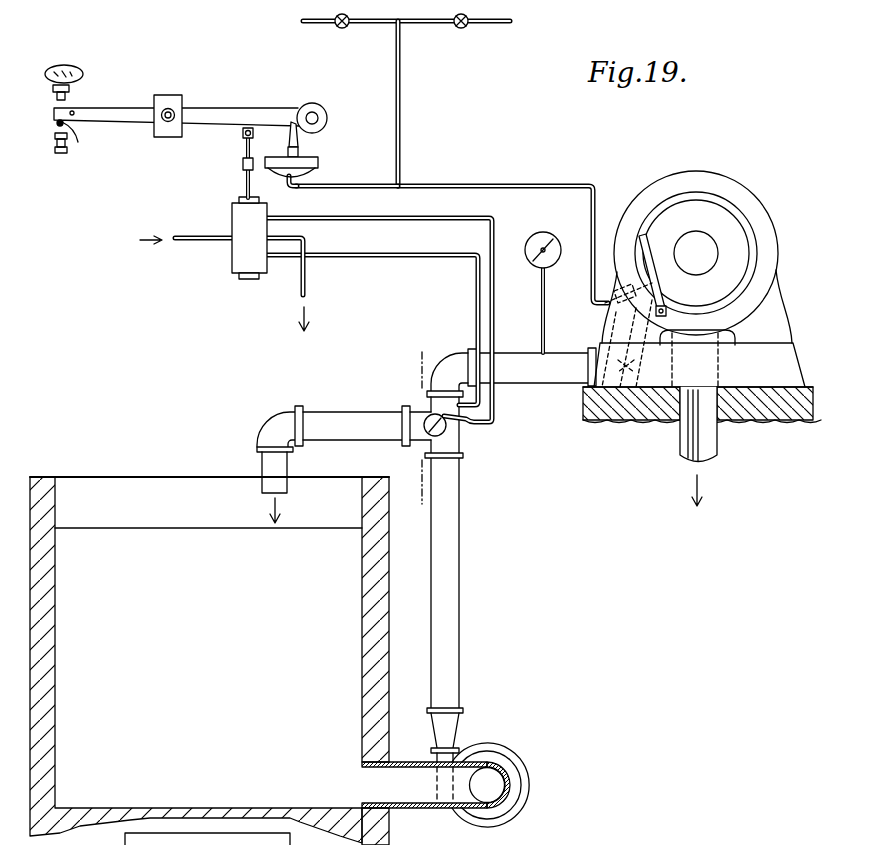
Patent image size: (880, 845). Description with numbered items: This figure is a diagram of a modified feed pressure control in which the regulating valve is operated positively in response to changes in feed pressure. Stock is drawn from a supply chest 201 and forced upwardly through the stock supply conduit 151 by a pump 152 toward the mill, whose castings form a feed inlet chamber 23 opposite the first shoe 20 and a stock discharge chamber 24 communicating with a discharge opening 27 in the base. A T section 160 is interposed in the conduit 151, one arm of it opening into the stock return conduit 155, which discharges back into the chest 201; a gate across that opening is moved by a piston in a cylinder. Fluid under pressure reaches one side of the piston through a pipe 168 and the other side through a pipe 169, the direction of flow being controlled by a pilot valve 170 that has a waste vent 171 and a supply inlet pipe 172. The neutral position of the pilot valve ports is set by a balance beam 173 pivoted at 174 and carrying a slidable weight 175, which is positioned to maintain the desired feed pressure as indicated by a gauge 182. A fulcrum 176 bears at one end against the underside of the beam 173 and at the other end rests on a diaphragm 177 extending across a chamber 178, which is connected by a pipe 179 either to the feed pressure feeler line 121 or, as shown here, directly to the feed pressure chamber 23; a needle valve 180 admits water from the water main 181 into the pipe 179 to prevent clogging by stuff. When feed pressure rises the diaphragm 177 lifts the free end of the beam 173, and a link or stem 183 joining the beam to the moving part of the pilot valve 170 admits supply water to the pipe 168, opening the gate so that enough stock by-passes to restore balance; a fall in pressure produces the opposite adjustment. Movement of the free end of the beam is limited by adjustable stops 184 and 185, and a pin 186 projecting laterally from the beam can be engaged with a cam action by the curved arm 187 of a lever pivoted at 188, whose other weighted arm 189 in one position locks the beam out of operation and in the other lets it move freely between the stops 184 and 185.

The first shoe 20 is at (413, 370).
The feed inlet chamber 23 is at (629, 344).
The stock discharge chamber 24 is at (705, 368).
The discharge opening 27 is at (688, 440).
The feed pressure feeler line 121 is at (403, 76).
The stock supply conduit 151 is at (523, 370).
The pump 152 is at (515, 758).
The stock return conduit 155 is at (273, 432).
The T section 160 is at (448, 440).
The pipe 168 is at (401, 220).
The pipe 169 is at (401, 258).
The pilot valve 170 is at (240, 252).
The waste vent 171 is at (305, 284).
The supply inlet pipe 172 is at (195, 242).
The balance beam 173 is at (226, 112).
The pivot 174 is at (316, 112).
The slidable weight 175 is at (170, 95).
The fulcrum 176 is at (306, 135).
The diaphragm 177 is at (312, 160).
The chamber 178 is at (289, 183).
The pipe 179 is at (383, 176).
The needle valve 180 is at (343, 30).
The water main 181 is at (308, 24).
The gauge 182 is at (538, 238).
The link or stem 183 is at (245, 183).
The adjustable stop 184 is at (70, 100).
The adjustable stop 185 is at (58, 152).
The pin 186 is at (74, 116).
The lever arm 187 is at (78, 142).
The lever pivot 188 is at (58, 126).
The weighted lever arm 189 is at (54, 110).
The supply chest 201 is at (45, 520).